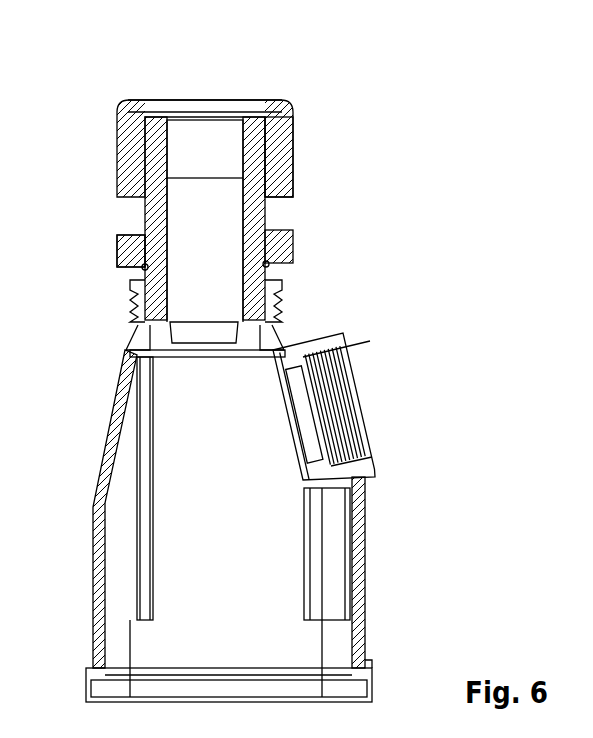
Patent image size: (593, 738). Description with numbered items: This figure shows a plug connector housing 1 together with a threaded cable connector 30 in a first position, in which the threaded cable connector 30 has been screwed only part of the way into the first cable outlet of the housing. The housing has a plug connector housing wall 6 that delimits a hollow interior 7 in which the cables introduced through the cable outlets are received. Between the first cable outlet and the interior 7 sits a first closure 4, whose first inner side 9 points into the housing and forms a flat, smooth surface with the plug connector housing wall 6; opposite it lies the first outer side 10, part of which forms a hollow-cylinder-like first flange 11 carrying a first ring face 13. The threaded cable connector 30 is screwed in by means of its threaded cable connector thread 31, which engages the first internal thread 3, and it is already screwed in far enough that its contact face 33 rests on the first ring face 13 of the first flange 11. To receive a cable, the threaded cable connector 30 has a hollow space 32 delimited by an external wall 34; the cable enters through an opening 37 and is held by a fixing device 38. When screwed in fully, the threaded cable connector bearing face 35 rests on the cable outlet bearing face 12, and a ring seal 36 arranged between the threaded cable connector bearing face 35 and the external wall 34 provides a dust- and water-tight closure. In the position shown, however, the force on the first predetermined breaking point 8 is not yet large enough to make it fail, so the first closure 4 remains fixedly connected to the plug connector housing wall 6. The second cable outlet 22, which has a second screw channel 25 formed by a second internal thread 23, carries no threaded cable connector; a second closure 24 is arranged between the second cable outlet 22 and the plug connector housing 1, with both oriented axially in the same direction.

The plug connector housing 1 is at (242, 526).
The first internal thread 3 is at (133, 308).
The first closure 4 is at (225, 362).
The plug connector housing wall 6 is at (95, 514).
The interior 7 is at (122, 640).
The first predetermined breaking point 8 is at (153, 362).
The first inner side 9 is at (192, 361).
The first outer side 10 is at (199, 330).
The first flange 11 is at (130, 333).
The cable outlet bearing face 12 is at (130, 278).
The first ring face 13 is at (175, 322).
The second cable outlet 22 is at (368, 484).
The second internal thread 23 is at (368, 458).
The second closure 24 is at (298, 450).
The second screw channel 25 is at (352, 431).
The threaded cable connector 30 is at (300, 242).
The threaded cable connector thread 31 is at (282, 310).
The hollow space 32 is at (212, 152).
The contact face 33 is at (292, 340).
The external wall 34 is at (257, 217).
The threaded cable connector bearing face 35 is at (120, 268).
The ring seal 36 is at (122, 234).
The opening 37 is at (207, 96).
The fixing device 38 is at (290, 165).